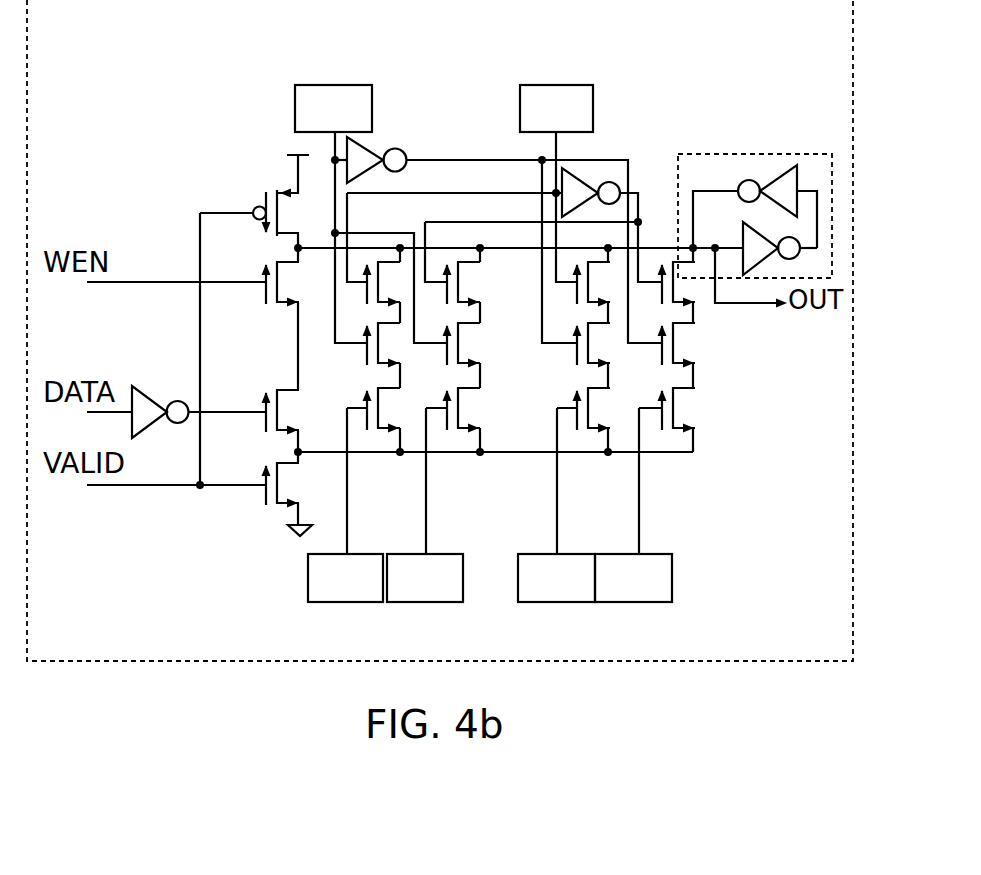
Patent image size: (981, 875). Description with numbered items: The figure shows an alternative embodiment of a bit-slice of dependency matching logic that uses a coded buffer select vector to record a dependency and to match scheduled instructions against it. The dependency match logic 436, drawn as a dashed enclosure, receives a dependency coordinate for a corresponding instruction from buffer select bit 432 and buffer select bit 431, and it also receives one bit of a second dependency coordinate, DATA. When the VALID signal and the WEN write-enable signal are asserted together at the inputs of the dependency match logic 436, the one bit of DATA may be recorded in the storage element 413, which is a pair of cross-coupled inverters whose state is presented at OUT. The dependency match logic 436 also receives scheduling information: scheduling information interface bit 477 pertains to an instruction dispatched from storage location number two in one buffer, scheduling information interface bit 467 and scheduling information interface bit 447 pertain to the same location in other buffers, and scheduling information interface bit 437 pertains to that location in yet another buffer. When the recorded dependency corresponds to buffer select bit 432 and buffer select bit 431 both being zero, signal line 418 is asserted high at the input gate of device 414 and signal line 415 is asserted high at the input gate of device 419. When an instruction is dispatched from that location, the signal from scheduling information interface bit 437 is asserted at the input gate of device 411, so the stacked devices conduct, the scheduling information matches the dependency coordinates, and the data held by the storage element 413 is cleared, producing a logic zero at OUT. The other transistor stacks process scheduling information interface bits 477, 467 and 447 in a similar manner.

The buffer select bit 432 is at (333, 108).
The buffer select bit 431 is at (556, 108).
The signal line 415 is at (438, 158).
The signal line 418 is at (633, 188).
The storage element 413 is at (700, 172).
The device 414 is at (673, 289).
The device 419 is at (693, 345).
The device 411 is at (693, 410).
The scheduling information interface bit 477 is at (345, 578).
The scheduling information interface bit 467 is at (425, 578).
The scheduling information interface bit 447 is at (556, 578).
The scheduling information interface bit 437 is at (633, 578).
The dependency match logic 436 is at (440, 330).